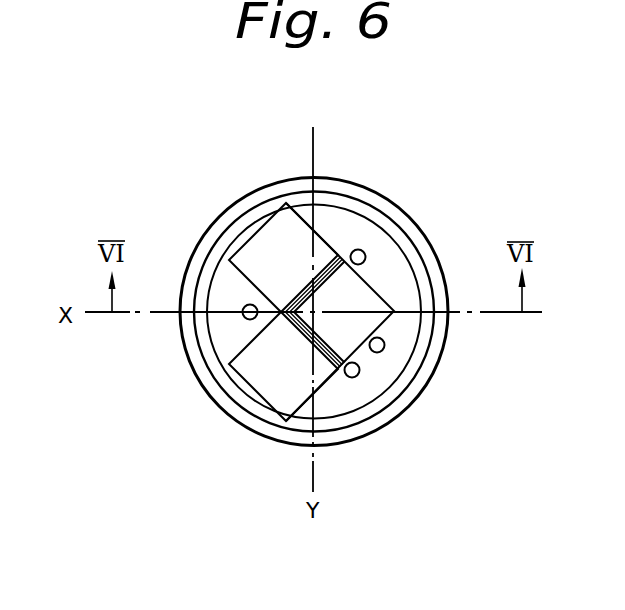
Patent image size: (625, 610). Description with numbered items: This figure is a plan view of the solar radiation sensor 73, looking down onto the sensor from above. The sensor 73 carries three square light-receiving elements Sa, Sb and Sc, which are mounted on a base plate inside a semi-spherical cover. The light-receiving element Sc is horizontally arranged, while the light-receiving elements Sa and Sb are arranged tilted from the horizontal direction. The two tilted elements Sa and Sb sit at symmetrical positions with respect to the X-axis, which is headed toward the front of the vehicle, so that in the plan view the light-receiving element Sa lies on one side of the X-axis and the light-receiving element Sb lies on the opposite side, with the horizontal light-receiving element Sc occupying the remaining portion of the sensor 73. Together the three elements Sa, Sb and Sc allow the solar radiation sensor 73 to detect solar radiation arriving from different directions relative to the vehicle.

The solar radiation sensor 73 is at (395, 170).
The light-receiving element Sa is at (274, 236).
The light-receiving element Sb is at (267, 377).
The light-receiving element Sc is at (363, 292).